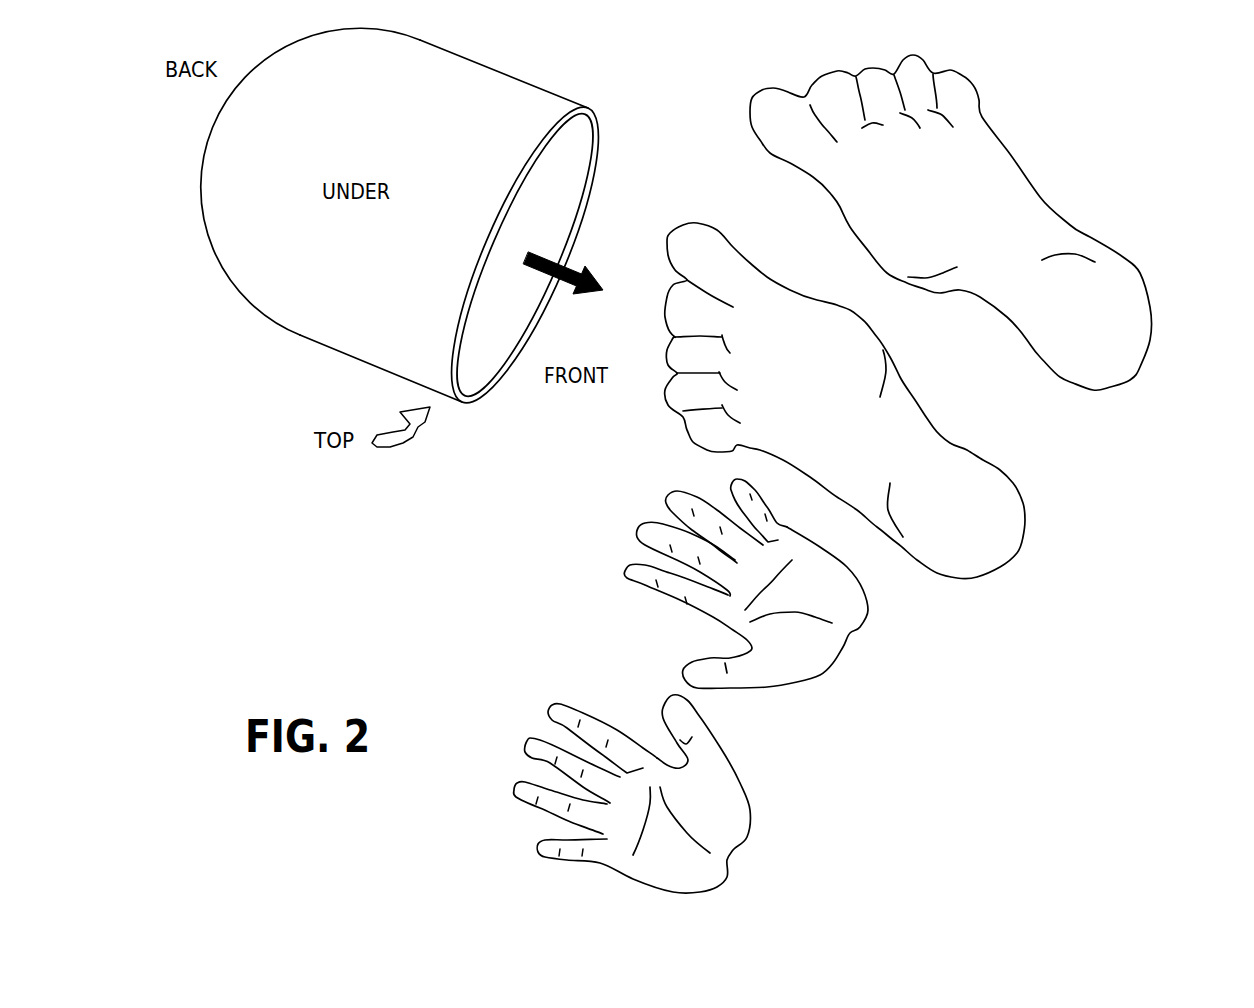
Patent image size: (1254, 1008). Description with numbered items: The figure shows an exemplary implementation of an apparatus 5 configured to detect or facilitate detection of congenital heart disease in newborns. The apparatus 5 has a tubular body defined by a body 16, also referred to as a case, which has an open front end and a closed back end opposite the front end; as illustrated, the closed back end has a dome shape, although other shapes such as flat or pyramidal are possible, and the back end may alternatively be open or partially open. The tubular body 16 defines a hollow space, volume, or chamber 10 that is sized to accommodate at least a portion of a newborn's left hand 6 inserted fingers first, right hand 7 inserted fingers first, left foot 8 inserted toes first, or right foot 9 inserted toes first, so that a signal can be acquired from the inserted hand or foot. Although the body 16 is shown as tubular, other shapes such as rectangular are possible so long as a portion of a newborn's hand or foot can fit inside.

The apparatus 5 is at (379, 243).
The body 16 is at (205, 172).
The chamber 10 is at (490, 257).
The left hand 6 is at (847, 645).
The right hand 7 is at (745, 840).
The left foot 8 is at (1130, 380).
The right foot 9 is at (1020, 557).